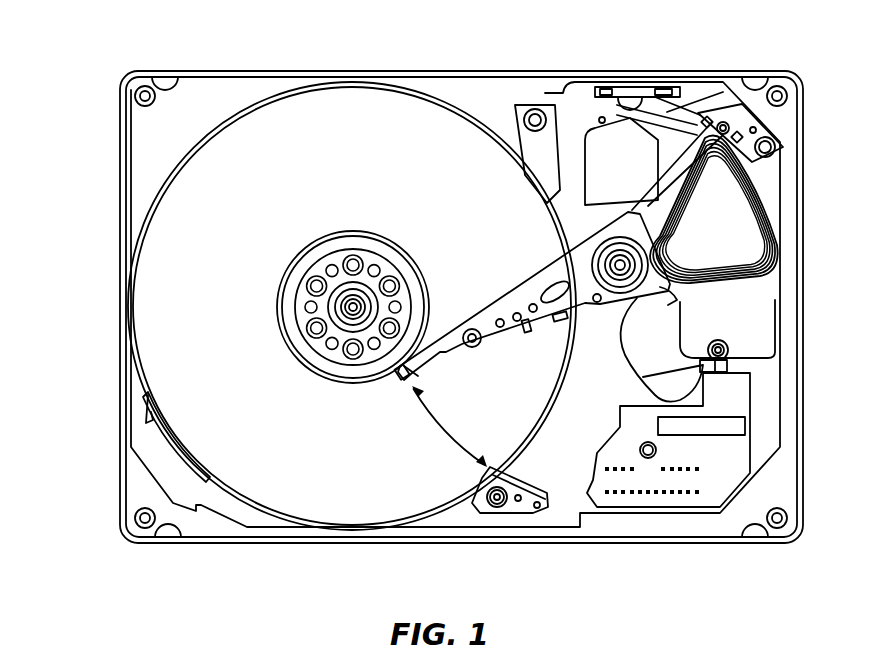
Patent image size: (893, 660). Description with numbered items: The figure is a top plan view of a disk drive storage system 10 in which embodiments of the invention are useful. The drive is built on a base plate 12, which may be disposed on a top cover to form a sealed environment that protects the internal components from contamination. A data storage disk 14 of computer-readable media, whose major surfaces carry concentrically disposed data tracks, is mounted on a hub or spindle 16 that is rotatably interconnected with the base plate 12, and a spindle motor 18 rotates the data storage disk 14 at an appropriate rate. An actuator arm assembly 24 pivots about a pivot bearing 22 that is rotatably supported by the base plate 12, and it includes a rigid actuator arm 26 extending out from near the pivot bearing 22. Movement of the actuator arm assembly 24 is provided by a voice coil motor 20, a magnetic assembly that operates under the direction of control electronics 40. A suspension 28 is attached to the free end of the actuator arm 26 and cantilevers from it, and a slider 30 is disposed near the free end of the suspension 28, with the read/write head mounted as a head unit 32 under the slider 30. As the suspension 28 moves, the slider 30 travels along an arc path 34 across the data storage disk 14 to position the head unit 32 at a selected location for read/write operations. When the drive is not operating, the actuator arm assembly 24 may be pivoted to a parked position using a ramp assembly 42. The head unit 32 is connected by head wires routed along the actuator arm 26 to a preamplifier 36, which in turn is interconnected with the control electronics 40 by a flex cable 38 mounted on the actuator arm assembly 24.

The disk drive storage system 10 is at (100, 128).
The base plate 12 is at (265, 71).
The data storage disk 14 is at (366, 115).
The spindle 16 is at (378, 238).
The spindle motor 18 is at (335, 289).
The voice coil motor 20 is at (725, 226).
The pivot bearing 22 is at (637, 258).
The actuator arm assembly 24 is at (540, 273).
The actuator arm 26 is at (508, 340).
The suspension 28 is at (445, 342).
The slider 30 is at (413, 373).
The head unit 32 is at (405, 380).
The arc path 34 is at (440, 425).
The preamplifier 36 is at (635, 318).
The flex cable 38 is at (700, 385).
The control electronics 40 is at (657, 500).
The ramp assembly 42 is at (525, 513).